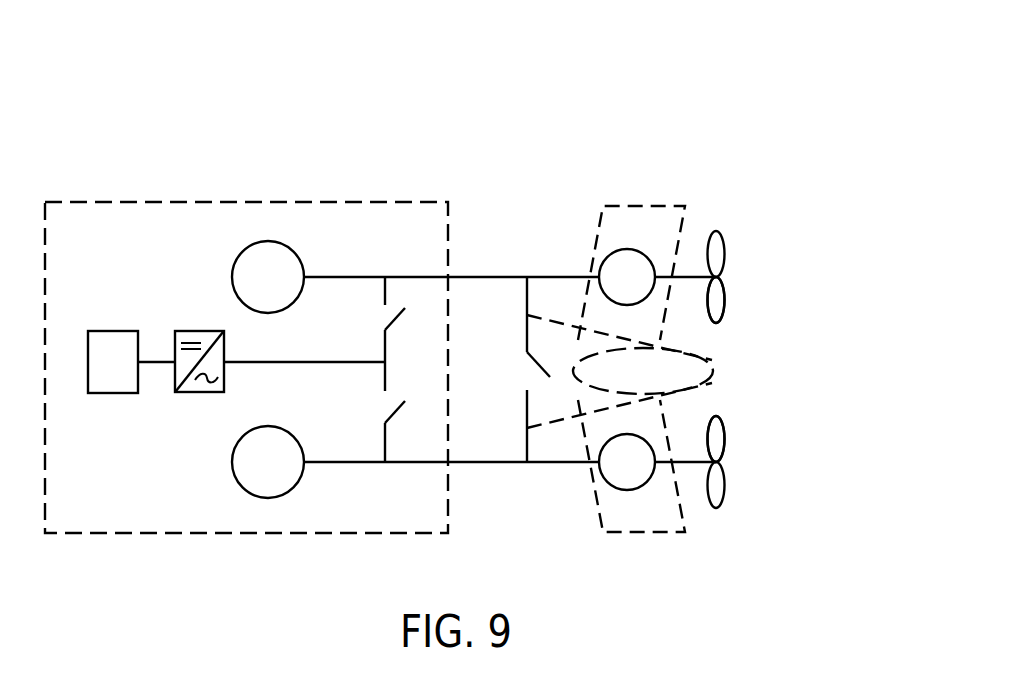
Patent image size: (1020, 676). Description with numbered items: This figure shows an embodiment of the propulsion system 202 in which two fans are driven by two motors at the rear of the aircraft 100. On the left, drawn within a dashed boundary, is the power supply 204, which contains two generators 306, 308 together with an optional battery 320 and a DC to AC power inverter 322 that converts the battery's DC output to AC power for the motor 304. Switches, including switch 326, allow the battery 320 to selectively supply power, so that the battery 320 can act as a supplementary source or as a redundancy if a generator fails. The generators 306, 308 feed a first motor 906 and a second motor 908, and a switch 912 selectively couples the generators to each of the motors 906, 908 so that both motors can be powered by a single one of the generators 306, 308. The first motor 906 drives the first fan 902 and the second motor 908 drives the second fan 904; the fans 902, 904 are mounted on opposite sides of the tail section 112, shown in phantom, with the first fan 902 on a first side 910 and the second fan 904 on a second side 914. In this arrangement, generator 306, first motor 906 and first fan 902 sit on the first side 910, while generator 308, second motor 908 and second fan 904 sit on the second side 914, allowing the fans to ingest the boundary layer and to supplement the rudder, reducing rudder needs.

The propulsion system 202 is at (620, 84).
The power supply 204 is at (163, 202).
The generator 306 is at (267, 241).
The generator 308 is at (267, 498).
The battery 320 is at (111, 331).
The DC to AC power inverter 322 is at (198, 331).
The motor 304 is at (402, 308).
The switch 326 is at (401, 406).
The switch 912 is at (541, 365).
The aircraft 100 is at (565, 446).
The first motor 906 is at (626, 249).
The second motor 908 is at (630, 491).
The tail section 112 is at (698, 225).
The first fan 902 is at (725, 258).
The first side 910 is at (746, 290).
The second fan 904 is at (725, 483).
The second side 914 is at (742, 420).